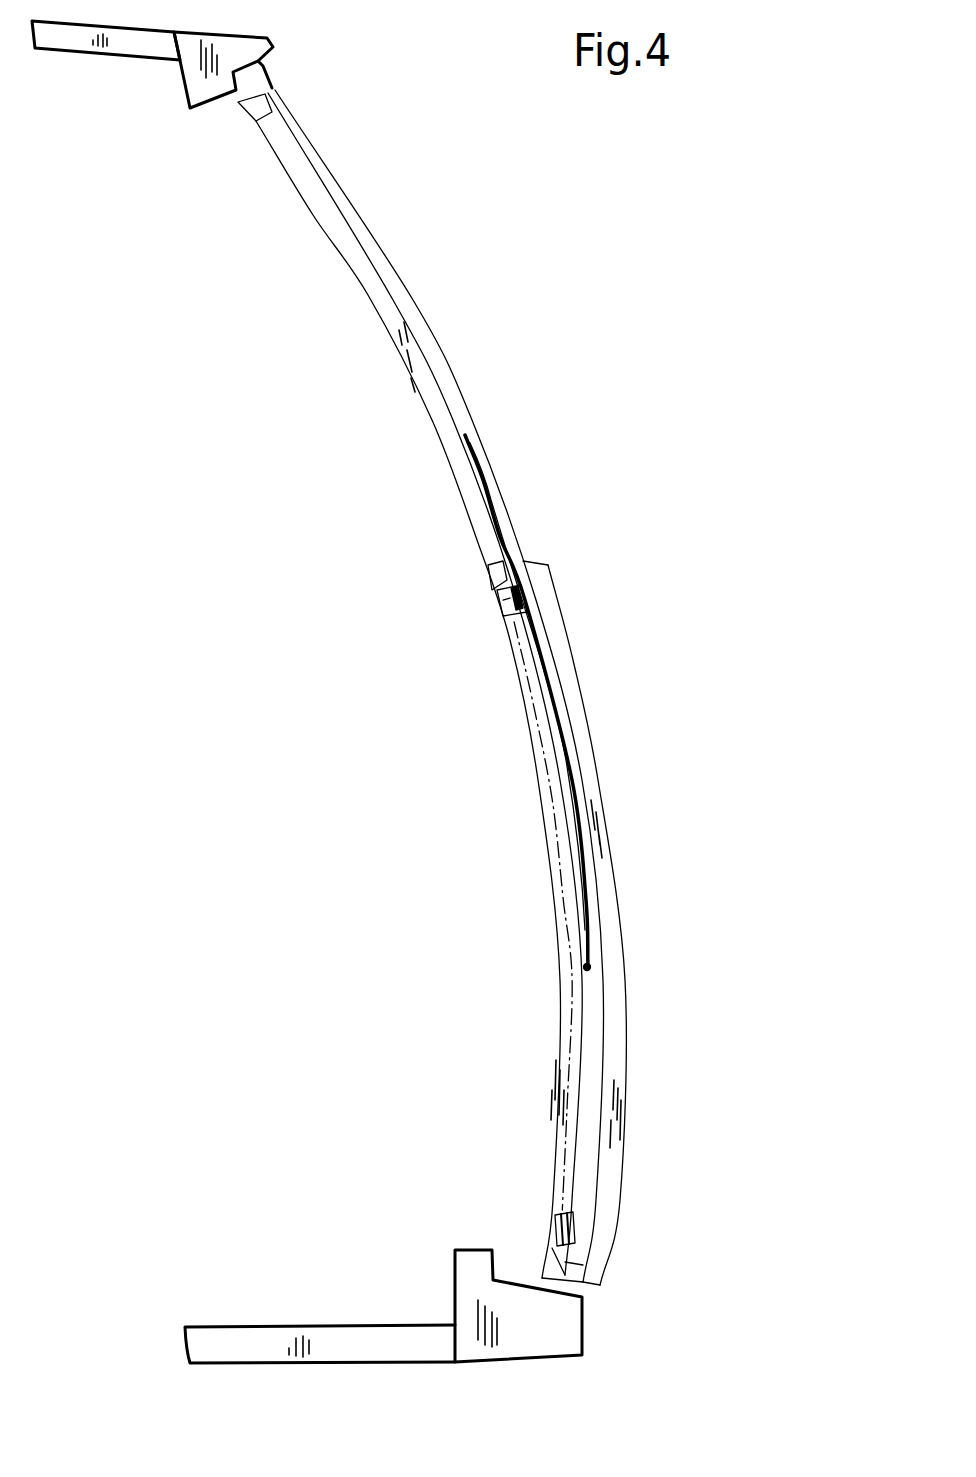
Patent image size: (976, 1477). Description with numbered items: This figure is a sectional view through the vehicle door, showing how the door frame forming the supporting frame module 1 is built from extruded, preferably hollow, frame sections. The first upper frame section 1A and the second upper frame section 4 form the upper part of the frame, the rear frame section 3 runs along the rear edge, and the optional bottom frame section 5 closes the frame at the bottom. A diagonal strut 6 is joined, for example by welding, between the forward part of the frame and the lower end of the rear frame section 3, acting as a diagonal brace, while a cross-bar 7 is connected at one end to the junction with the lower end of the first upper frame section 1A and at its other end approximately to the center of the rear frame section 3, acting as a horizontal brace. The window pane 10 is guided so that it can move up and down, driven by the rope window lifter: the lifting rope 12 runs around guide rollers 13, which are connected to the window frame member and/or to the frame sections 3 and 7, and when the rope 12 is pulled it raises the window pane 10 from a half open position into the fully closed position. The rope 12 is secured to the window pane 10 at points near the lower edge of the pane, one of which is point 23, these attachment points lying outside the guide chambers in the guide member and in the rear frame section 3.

The supporting frame module 1 is at (398, 268).
The first upper frame section 1A is at (360, 207).
The rear frame section 3 is at (410, 362).
The second upper frame section 4 is at (258, 108).
The bottom frame section 5 is at (563, 1272).
The diagonal strut 6 is at (573, 714).
The cross-bar 7 is at (505, 582).
The window pane 10 is at (490, 477).
The lifting rope 12 is at (533, 693).
The guide rollers 13 is at (497, 598).
The attachment point 23 is at (584, 967).